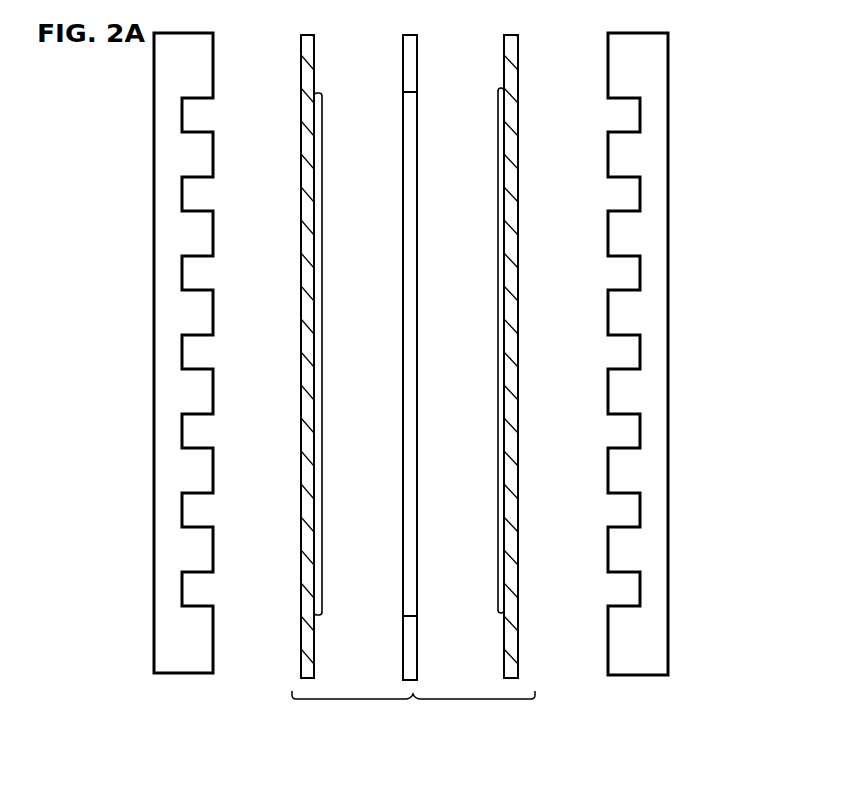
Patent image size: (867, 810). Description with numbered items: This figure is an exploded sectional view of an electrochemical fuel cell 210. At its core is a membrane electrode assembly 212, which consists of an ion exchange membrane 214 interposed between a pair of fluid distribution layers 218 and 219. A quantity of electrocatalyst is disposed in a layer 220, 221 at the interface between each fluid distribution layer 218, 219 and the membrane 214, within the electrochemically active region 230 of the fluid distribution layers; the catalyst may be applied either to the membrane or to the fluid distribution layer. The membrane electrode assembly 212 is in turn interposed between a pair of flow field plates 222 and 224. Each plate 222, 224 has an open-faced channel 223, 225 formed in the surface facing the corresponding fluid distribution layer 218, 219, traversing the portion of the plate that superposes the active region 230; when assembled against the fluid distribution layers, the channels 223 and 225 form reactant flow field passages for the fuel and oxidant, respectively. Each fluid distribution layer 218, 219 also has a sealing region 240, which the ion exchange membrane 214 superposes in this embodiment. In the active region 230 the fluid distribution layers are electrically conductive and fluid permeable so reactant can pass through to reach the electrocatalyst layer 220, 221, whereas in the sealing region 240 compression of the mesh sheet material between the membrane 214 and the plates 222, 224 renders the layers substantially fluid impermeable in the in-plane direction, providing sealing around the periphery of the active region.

The electrochemical fuel cell 210 is at (664, 25).
The membrane electrode assembly 212 is at (413, 712).
The ion exchange membrane 214 is at (403, 683).
The fluid distribution layer 218 is at (294, 678).
The fluid distribution layer 219 is at (528, 678).
The electrocatalyst layer 220 is at (322, 125).
The electrocatalyst layer 221 is at (498, 115).
The flow field plate 222 is at (163, 662).
The open-faced channel 223 is at (198, 510).
The flow field plate 224 is at (650, 666).
The open-faced channel 225 is at (630, 592).
The electrochemically active region 230 is at (409, 323).
The sealing region 240 is at (301, 63).